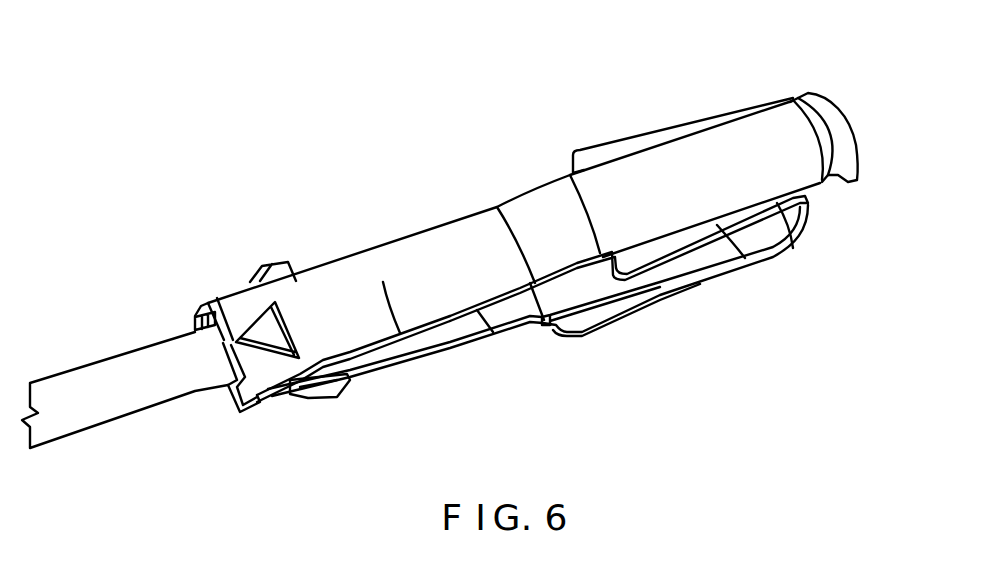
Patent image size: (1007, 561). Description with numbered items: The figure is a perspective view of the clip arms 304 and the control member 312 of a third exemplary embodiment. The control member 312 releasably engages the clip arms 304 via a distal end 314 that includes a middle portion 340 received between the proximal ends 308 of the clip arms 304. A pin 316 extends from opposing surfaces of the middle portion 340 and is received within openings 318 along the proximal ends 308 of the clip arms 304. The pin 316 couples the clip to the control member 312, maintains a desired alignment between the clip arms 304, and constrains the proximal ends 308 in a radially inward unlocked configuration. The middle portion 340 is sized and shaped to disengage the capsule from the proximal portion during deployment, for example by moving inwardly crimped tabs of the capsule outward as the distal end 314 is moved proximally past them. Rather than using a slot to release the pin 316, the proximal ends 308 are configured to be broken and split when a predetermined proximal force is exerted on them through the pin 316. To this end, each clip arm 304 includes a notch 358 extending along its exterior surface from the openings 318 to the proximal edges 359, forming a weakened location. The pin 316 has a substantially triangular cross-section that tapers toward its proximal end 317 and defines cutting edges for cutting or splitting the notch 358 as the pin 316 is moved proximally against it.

The clip arms 304 is at (713, 260).
The proximal ends 308 is at (248, 305).
The control member 312 is at (68, 384).
The distal end 314 is at (275, 273).
The pin 316 is at (208, 301).
The proximal end 317 is at (255, 352).
The openings 318 is at (280, 336).
The middle portion 340 is at (335, 397).
The notch 358 is at (238, 343).
The proximal edges 359 is at (196, 314).